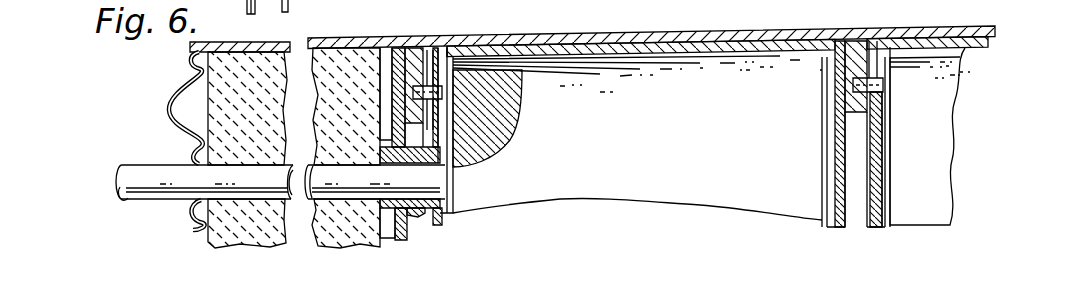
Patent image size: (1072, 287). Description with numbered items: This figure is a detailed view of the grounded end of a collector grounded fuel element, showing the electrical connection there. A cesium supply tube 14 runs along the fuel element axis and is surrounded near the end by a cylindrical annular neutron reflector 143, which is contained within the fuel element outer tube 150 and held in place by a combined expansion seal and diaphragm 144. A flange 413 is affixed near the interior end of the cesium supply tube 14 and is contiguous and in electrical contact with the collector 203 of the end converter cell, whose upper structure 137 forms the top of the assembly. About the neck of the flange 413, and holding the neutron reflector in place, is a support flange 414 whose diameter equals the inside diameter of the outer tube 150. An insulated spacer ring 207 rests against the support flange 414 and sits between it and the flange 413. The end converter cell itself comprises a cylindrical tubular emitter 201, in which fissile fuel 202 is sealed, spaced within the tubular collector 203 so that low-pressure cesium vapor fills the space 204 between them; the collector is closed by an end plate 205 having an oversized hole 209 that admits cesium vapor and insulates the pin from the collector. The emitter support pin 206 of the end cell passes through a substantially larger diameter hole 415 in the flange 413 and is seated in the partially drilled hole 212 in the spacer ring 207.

The cesium supply tube 14 is at (140, 156).
The top plate assembly 137 is at (670, 27).
The cylindrical annular neutron reflector 143 is at (306, 87).
The combined expansion seal and diaphragm 144 is at (178, 86).
The fuel element outer tube 150 is at (670, 33).
The emitter 201 is at (948, 143).
The fissile fuel 202 is at (512, 118).
The collector 203 is at (660, 52).
The space 204 is at (607, 57).
The end plate 205 is at (875, 228).
The emitter support pin 206 is at (413, 95).
The insulated spacer ring 207 is at (402, 82).
The hole 209 is at (883, 96).
The partially drilled hole 212 is at (418, 47).
The flange 413 is at (440, 226).
The support flange 414 is at (402, 238).
The hole 415 is at (434, 60).